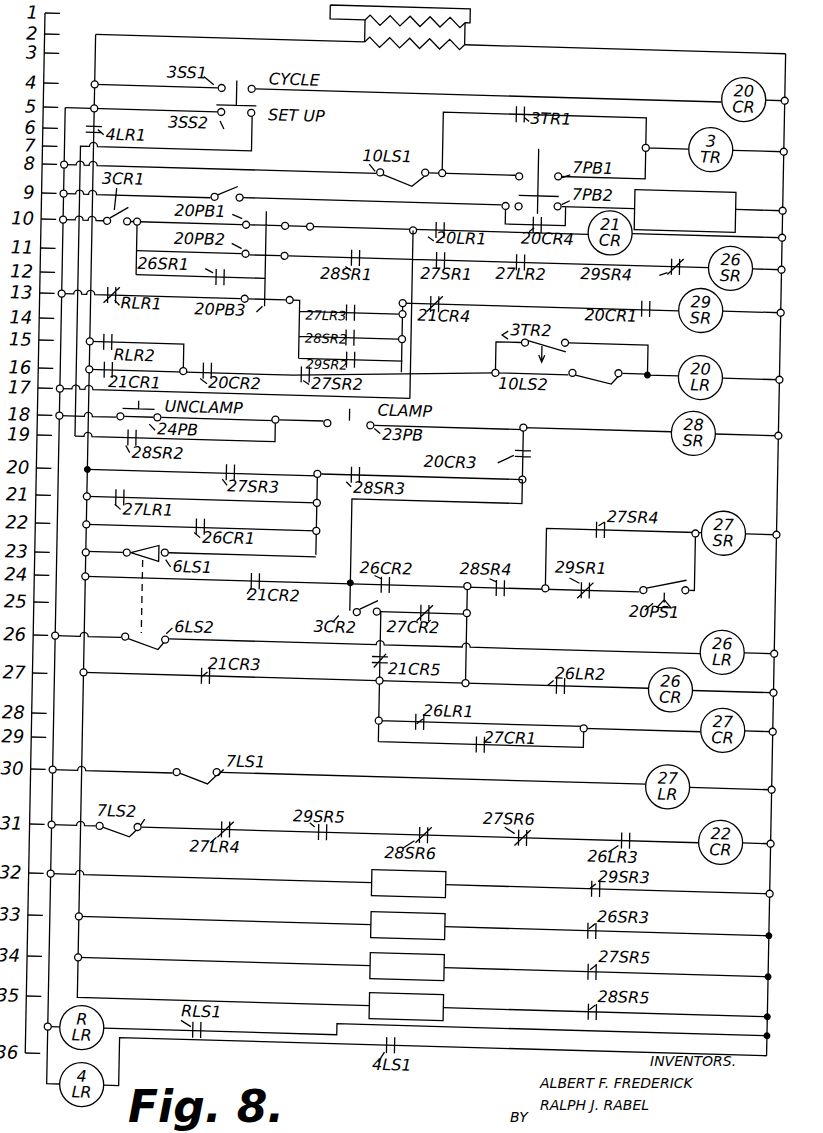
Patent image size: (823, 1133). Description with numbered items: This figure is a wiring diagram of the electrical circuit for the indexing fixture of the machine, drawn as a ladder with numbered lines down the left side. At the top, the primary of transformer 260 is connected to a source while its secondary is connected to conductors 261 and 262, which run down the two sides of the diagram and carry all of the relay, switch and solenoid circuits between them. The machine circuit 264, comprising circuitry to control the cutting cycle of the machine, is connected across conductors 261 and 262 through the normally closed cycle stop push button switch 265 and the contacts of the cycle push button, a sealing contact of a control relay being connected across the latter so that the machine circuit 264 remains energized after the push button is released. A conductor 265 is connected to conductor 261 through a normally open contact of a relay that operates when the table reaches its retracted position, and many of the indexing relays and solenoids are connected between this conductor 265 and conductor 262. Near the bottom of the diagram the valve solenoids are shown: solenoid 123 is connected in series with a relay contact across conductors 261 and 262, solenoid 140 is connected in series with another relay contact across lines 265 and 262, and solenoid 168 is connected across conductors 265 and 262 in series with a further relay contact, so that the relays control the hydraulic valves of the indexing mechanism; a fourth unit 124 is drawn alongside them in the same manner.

The solenoid 123 is at (462, 868).
The timer/counter unit 124 is at (462, 909).
The solenoid 140 is at (462, 948).
The solenoid 168 is at (462, 989).
The transformer 260 is at (476, 30).
The conductor 261 is at (306, 38).
The conductor 262 is at (592, 31).
The machine circuit 264 is at (745, 173).
The cycle stop push button switch 265 is at (258, 190).